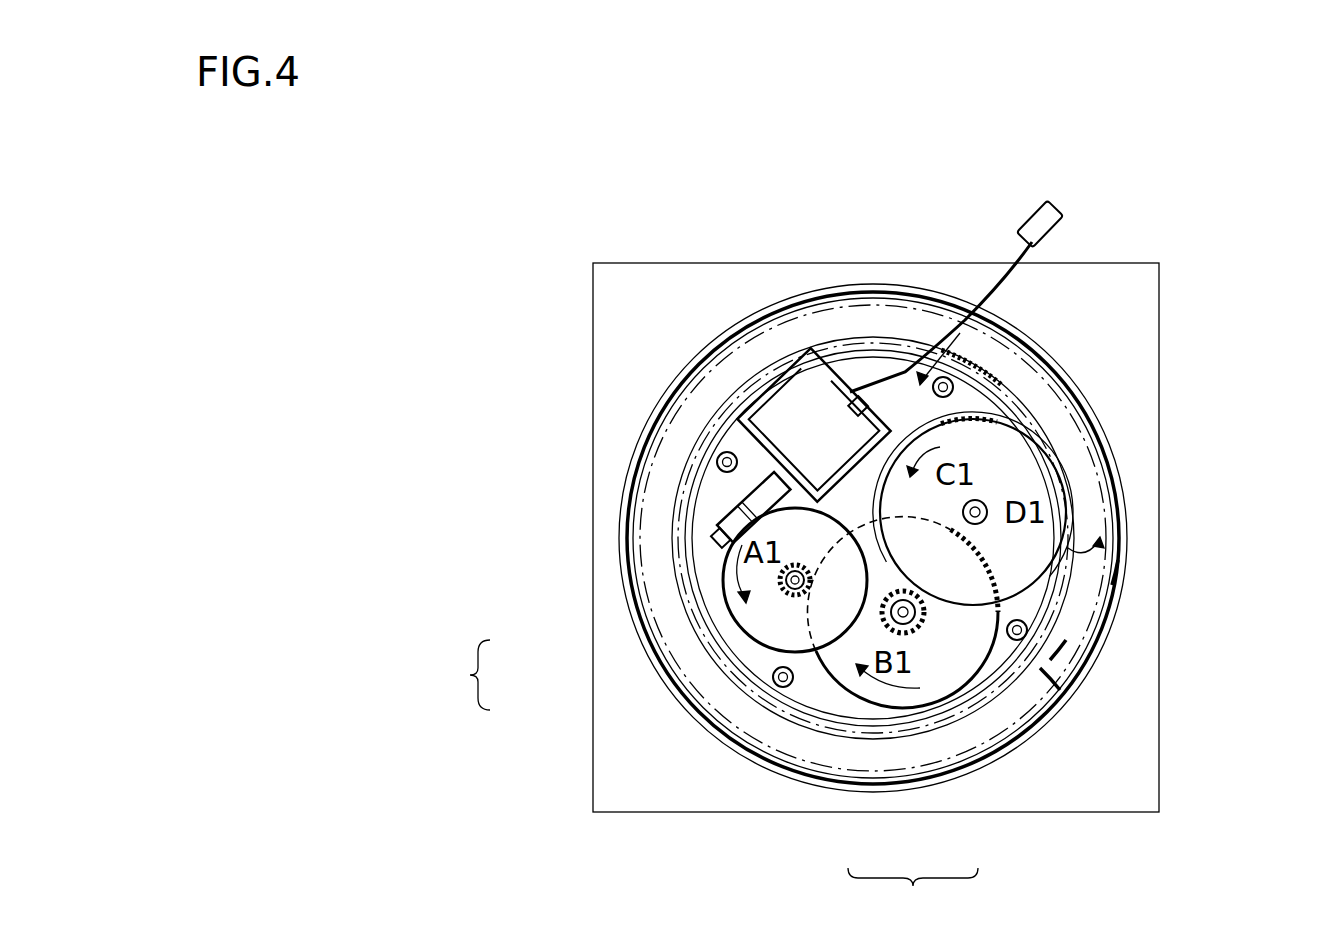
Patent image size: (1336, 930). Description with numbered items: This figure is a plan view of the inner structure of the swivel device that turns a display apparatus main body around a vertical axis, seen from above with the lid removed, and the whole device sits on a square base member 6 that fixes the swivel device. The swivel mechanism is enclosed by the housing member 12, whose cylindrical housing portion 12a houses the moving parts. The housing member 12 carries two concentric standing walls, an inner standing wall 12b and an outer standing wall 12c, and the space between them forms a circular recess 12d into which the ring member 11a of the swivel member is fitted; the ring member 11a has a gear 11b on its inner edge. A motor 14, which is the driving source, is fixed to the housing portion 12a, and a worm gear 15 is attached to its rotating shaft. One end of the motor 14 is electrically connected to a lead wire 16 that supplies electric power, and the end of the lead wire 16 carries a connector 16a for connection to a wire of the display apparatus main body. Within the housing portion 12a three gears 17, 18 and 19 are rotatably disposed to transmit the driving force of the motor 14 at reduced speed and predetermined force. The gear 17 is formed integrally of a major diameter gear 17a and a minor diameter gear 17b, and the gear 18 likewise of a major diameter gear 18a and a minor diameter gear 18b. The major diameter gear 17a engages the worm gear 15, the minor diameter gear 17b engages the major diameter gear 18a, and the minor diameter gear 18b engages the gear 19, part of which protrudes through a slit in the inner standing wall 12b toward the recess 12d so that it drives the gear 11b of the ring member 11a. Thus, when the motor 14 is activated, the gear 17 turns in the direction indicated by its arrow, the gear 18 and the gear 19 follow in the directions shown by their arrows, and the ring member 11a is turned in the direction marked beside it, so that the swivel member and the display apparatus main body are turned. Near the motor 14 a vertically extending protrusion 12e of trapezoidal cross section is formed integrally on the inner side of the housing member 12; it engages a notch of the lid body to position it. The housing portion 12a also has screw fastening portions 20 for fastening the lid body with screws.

The base member 6 is at (1160, 288).
The ring member 11a is at (1135, 642).
The gear 11b is at (1003, 377).
The housing member 12 is at (1132, 518).
The housing portion 12a is at (960, 333).
The inner standing wall 12b is at (1048, 676).
The outer standing wall 12c is at (1128, 567).
The recess 12d is at (1072, 652).
The protrusion 12e is at (874, 348).
The motor 14 is at (820, 430).
The worm gear 15 is at (720, 527).
The lead wire 16 is at (1001, 300).
The connector 16a is at (1062, 216).
The gear 17 is at (456, 675).
The major diameter gear 17a is at (768, 630).
The minor diameter gear 17b is at (780, 593).
The gear 18 is at (913, 891).
The major diameter gear 18a is at (896, 708).
The minor diameter gear 18b is at (923, 637).
The gear 19 is at (1028, 470).
The screw fastening portions 20 is at (717, 454).